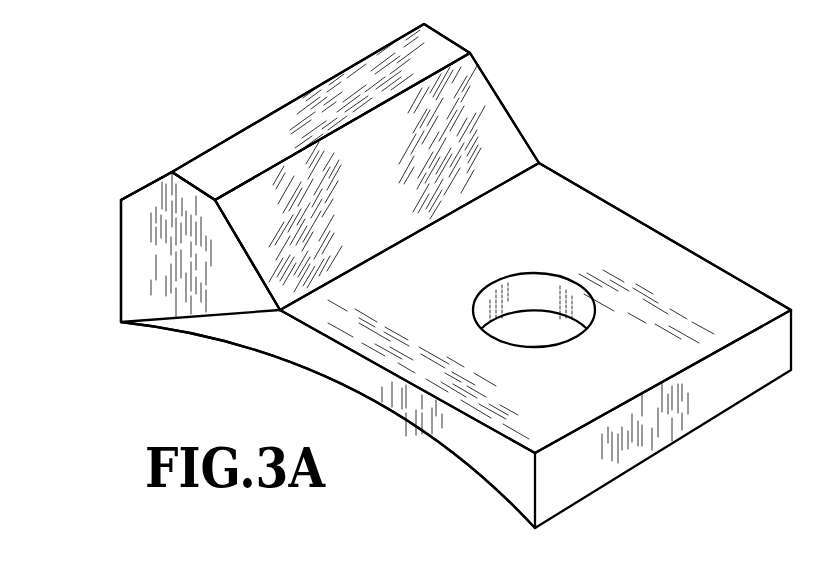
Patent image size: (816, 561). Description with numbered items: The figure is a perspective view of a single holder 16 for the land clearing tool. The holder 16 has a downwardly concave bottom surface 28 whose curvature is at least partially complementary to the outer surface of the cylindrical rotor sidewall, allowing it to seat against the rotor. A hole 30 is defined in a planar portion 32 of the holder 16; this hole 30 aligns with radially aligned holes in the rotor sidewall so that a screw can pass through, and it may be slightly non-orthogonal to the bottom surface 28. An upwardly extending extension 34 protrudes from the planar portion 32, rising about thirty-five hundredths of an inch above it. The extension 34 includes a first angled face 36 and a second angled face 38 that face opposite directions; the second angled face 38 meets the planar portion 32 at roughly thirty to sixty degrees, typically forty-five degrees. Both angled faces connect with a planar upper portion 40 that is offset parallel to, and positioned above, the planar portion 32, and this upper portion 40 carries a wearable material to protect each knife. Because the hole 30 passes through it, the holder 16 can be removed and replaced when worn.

The holder 16 is at (612, 150).
The bottom surface 28 is at (278, 350).
The hole 30 is at (548, 288).
The planar portion 32 is at (649, 258).
The extension 34 is at (140, 227).
The first angled face 36 is at (142, 187).
The second angled face 38 is at (494, 130).
The planar upper portion 40 is at (307, 113).